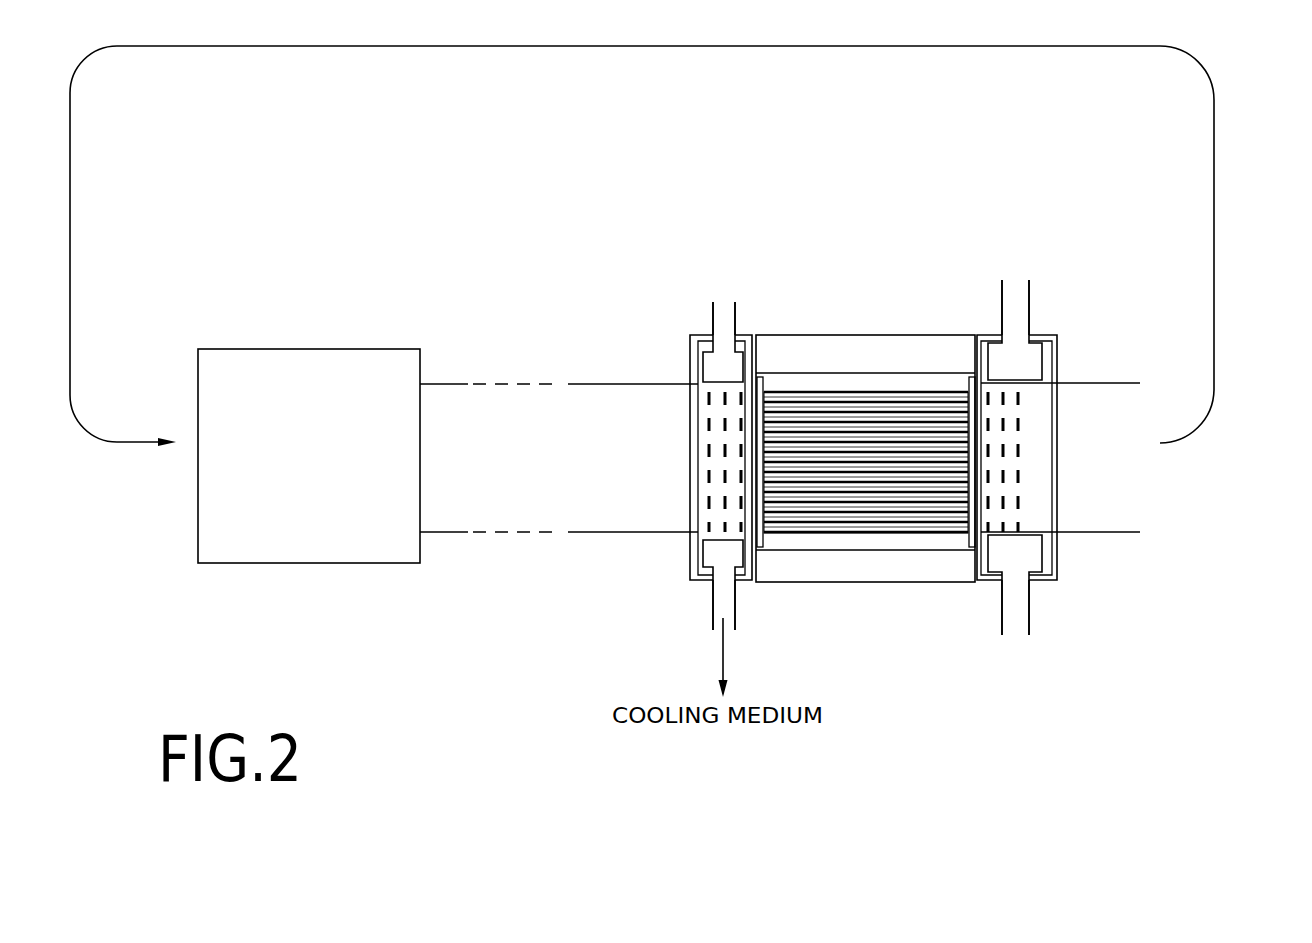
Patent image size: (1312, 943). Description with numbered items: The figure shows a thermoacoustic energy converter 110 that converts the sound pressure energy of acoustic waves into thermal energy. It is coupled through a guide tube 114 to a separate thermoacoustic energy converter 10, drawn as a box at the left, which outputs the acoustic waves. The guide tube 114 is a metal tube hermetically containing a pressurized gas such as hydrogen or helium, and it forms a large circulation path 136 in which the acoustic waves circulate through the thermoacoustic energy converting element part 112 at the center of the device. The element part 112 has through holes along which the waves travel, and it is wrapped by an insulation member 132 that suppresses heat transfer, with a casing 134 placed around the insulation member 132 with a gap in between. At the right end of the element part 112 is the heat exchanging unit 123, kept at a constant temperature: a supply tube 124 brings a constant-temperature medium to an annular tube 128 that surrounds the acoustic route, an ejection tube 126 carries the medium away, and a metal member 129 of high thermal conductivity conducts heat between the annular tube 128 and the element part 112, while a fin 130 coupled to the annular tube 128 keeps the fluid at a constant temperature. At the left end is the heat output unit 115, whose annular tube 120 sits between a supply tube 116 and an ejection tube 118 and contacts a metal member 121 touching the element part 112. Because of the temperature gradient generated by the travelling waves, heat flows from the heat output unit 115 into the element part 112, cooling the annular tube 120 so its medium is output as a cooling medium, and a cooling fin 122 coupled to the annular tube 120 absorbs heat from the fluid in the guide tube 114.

The thermoacoustic energy converter 10 is at (312, 349).
The thermoacoustic energy converter 110 is at (946, 679).
The thermoacoustic energy converting element part 112 is at (912, 523).
The guide tube 114 is at (580, 533).
The heat output unit 115 is at (662, 560).
The supply tube 116 is at (722, 304).
The ejection tube 118 is at (720, 617).
The annular tube 120 is at (708, 365).
The metal member 121 is at (760, 335).
The cooling fin 122 is at (720, 510).
The heat exchanging unit 123 is at (1099, 606).
The supply tube 124 is at (1015, 300).
The ejection tube 126 is at (1015, 612).
The annular tube 128 is at (1020, 353).
The metal member 129 is at (970, 380).
The fin 130 is at (1010, 497).
The insulation member 132 is at (930, 385).
The casing 134 is at (830, 334).
The circulation path 136 is at (1215, 105).